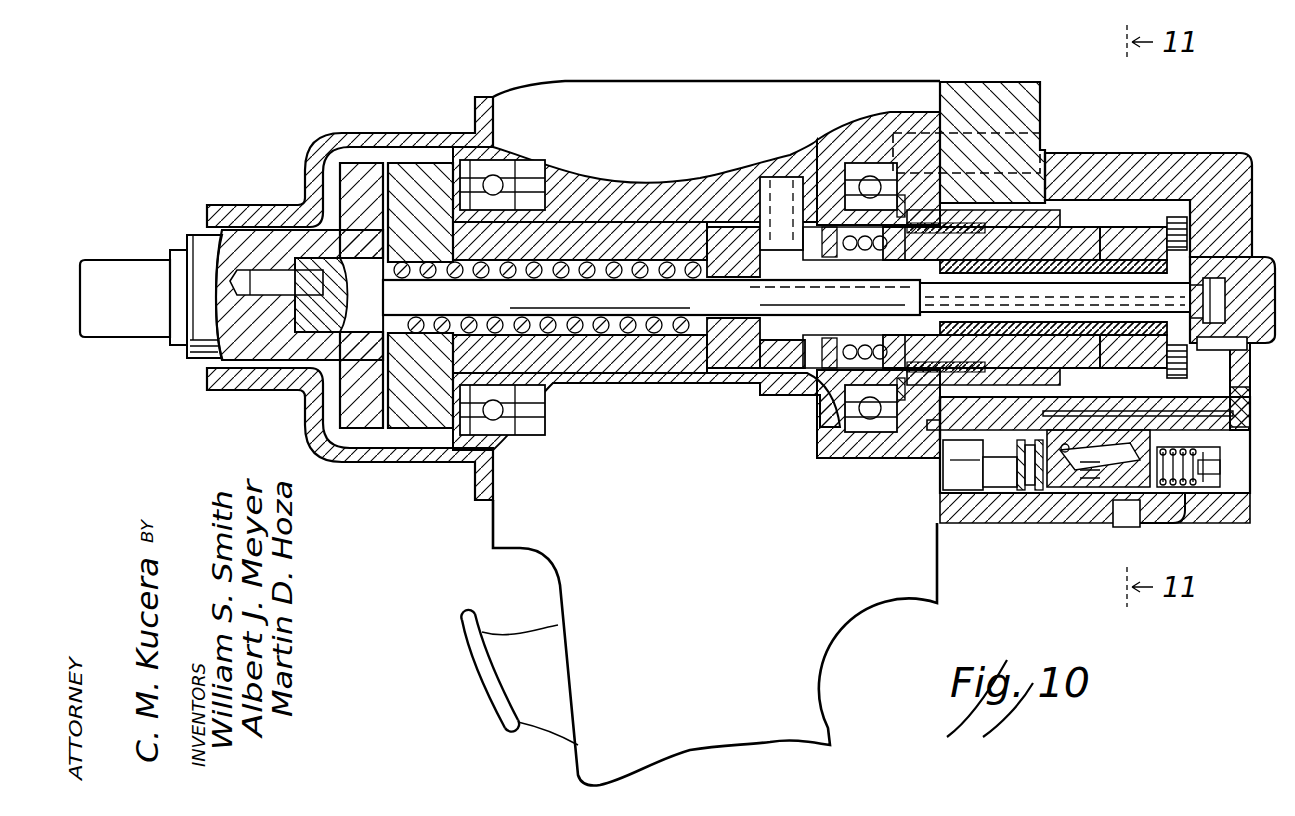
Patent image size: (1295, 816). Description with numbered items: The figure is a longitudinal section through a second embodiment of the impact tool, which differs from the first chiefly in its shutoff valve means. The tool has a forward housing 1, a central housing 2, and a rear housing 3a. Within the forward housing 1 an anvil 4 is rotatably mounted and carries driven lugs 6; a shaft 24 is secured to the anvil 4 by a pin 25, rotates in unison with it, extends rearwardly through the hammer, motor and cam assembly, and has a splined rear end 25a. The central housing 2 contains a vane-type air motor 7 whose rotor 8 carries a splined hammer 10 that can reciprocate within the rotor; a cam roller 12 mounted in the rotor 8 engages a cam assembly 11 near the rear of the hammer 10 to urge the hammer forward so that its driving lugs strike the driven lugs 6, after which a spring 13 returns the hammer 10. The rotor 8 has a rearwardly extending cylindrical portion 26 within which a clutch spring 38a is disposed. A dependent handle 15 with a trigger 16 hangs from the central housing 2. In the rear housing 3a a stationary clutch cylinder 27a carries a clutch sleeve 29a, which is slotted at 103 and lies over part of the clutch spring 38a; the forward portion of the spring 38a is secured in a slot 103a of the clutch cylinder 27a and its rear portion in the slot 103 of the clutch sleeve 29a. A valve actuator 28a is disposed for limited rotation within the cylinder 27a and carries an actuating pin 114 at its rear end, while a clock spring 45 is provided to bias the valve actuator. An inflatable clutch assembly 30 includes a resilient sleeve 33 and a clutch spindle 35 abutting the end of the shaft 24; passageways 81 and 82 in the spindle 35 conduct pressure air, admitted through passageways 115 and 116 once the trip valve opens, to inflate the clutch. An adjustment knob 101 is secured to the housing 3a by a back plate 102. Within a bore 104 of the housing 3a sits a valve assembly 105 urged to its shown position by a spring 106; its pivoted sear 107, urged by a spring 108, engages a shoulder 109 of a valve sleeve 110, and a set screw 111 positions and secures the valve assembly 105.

The forward housing 1 is at (388, 131).
The central housing 2 is at (683, 79).
The rear housing 3a is at (1115, 152).
The anvil 4 is at (270, 240).
The driven lugs 6 is at (357, 166).
The air motor 7 is at (746, 297).
The rotor 8 is at (618, 183).
The hammer 10 is at (415, 165).
The cam assembly 11 is at (777, 340).
The cam roller 12 is at (777, 176).
The spring 13 is at (642, 260).
The handle 15 is at (830, 710).
The trigger 16 is at (480, 668).
The shaft 24 is at (488, 301).
The pin 25 is at (262, 276).
The splined rear end 25a is at (728, 303).
The rear cylindrical portion 26 is at (830, 214).
The clutch cylinder 27a is at (1075, 226).
The valve actuator 28a is at (1150, 238).
The clutch sleeve 29a is at (1030, 226).
The inflatable clutch assembly 30 is at (1113, 253).
The resilient sleeve 33 is at (1085, 256).
The clutch spindle 35 is at (1180, 275).
The clutch spring 38a is at (968, 228).
The clock spring 45 is at (1178, 218).
The passageway 81 is at (1045, 305).
The passageway 82 is at (1060, 292).
The adjustment knob 101 is at (1243, 215).
The back plate 102 is at (1250, 152).
The slot 103 is at (970, 212).
The slot 103a is at (895, 420).
The bore 104 is at (1045, 500).
The valve assembly 105 is at (1150, 487).
The spring 106 is at (1250, 440).
The sear 107 is at (1098, 458).
The spring 108 is at (1090, 472).
The shoulder 109 is at (1140, 440).
The valve sleeve 110 is at (1215, 472).
The set screw 111 is at (1135, 527).
The actuating pin 114 is at (1225, 300).
The passageway 115 is at (1250, 420).
The passageway 116 is at (1245, 352).